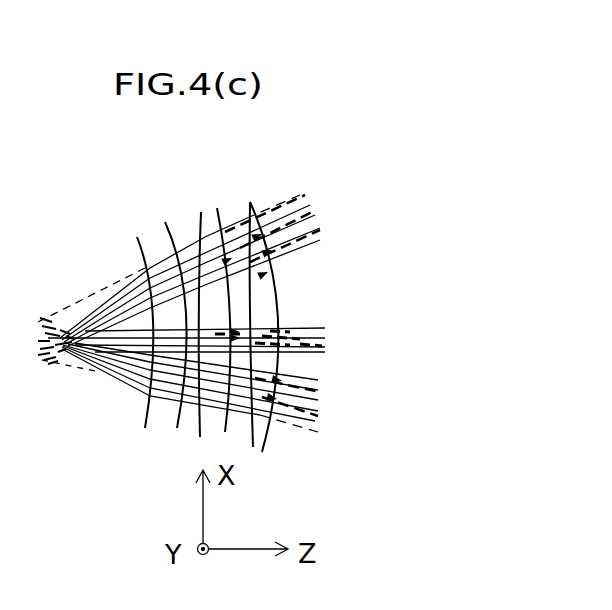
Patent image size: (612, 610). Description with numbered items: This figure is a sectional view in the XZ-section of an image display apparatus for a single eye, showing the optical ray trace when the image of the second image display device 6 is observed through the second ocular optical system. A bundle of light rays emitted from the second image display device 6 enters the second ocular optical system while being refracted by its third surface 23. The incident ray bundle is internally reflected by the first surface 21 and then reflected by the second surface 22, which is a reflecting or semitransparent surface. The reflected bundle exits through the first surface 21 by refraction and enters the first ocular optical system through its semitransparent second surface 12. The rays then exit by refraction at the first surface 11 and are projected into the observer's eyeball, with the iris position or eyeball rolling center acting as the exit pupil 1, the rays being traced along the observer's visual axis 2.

The observer's pupil position 1 is at (70, 357).
The observer's visual axis 2 is at (132, 338).
The second image display device 6 is at (277, 308).
The first surface of the first ocular optical system 11 is at (130, 258).
The second surface of the first ocular optical system 12 is at (163, 227).
The first surface of the second ocular optical system 21 is at (218, 212).
The second surface of the second ocular optical system 22 is at (277, 290).
The third surface of the second ocular optical system 23 is at (195, 218).